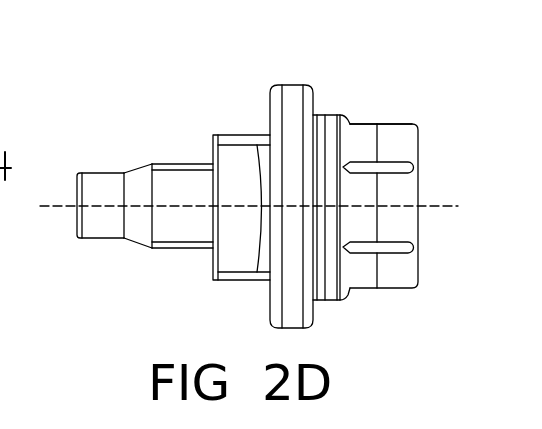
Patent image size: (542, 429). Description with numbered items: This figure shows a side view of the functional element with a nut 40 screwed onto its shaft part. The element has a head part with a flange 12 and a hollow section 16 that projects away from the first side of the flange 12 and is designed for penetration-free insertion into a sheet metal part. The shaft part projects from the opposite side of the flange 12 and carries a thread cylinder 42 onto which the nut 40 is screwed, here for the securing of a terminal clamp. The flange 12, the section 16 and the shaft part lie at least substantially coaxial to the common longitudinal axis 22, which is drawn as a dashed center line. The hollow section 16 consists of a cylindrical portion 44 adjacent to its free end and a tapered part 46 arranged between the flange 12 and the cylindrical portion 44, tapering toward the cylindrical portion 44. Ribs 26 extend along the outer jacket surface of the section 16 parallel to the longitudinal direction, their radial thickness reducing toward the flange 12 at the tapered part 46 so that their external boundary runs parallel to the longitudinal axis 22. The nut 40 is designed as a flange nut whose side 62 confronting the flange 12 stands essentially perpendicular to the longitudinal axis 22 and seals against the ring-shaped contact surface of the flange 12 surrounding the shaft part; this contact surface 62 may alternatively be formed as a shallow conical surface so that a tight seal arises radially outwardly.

The flange 12 is at (173, 222).
The section 16 is at (388, 277).
The longitudinal axis 22 is at (62, 207).
The ribs 26 is at (400, 162).
The nut 40 is at (290, 308).
The thread cylinder 42 is at (188, 166).
The cylindrical portion 44 is at (392, 148).
The tapered part 46 is at (362, 147).
The side of the nut 62 is at (316, 311).